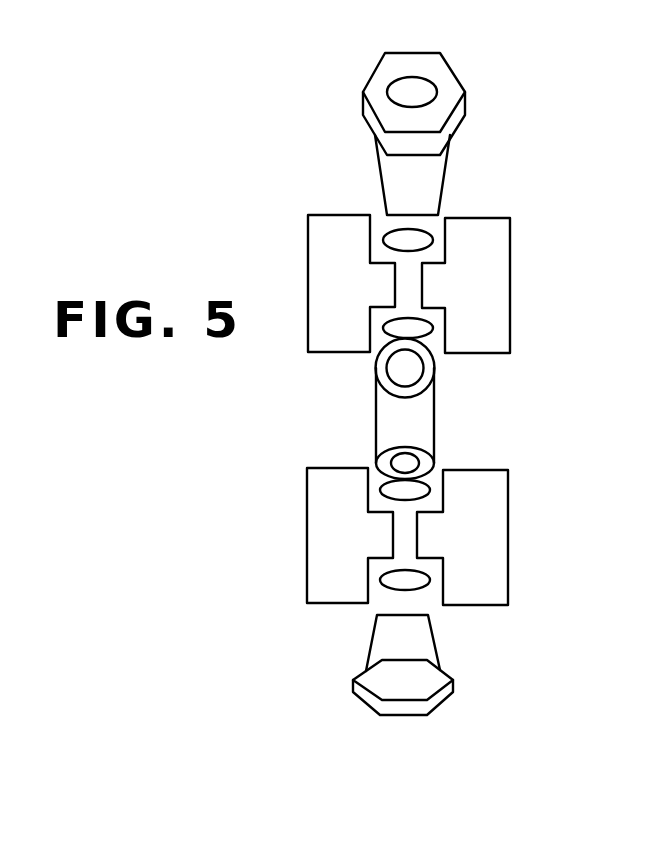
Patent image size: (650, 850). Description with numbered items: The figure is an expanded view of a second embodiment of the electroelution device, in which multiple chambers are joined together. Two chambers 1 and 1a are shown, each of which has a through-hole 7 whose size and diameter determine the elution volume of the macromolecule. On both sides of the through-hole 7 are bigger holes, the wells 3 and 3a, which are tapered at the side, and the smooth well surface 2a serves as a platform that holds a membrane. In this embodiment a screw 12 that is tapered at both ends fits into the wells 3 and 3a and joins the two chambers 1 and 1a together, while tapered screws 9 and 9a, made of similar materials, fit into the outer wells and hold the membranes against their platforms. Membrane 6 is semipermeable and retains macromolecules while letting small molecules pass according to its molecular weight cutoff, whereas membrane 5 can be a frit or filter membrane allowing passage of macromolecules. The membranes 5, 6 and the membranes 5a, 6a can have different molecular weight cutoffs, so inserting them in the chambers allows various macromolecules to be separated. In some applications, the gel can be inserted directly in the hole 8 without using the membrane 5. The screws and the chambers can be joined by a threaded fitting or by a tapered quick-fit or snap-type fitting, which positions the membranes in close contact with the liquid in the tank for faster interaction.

The chamber 1 is at (510, 267).
The chamber 1a is at (508, 533).
The well surface 2a is at (368, 558).
The well 3 is at (437, 253).
The well 3a is at (435, 318).
The membrane 5 is at (432, 488).
The membrane 5a is at (436, 240).
The membrane 6 is at (430, 335).
The membrane 6a is at (437, 585).
The through-hole 7 is at (412, 290).
The hole 8 is at (468, 460).
The tapered screw 9 is at (468, 110).
The tapered screw 9a is at (443, 700).
The screw 12 is at (435, 433).